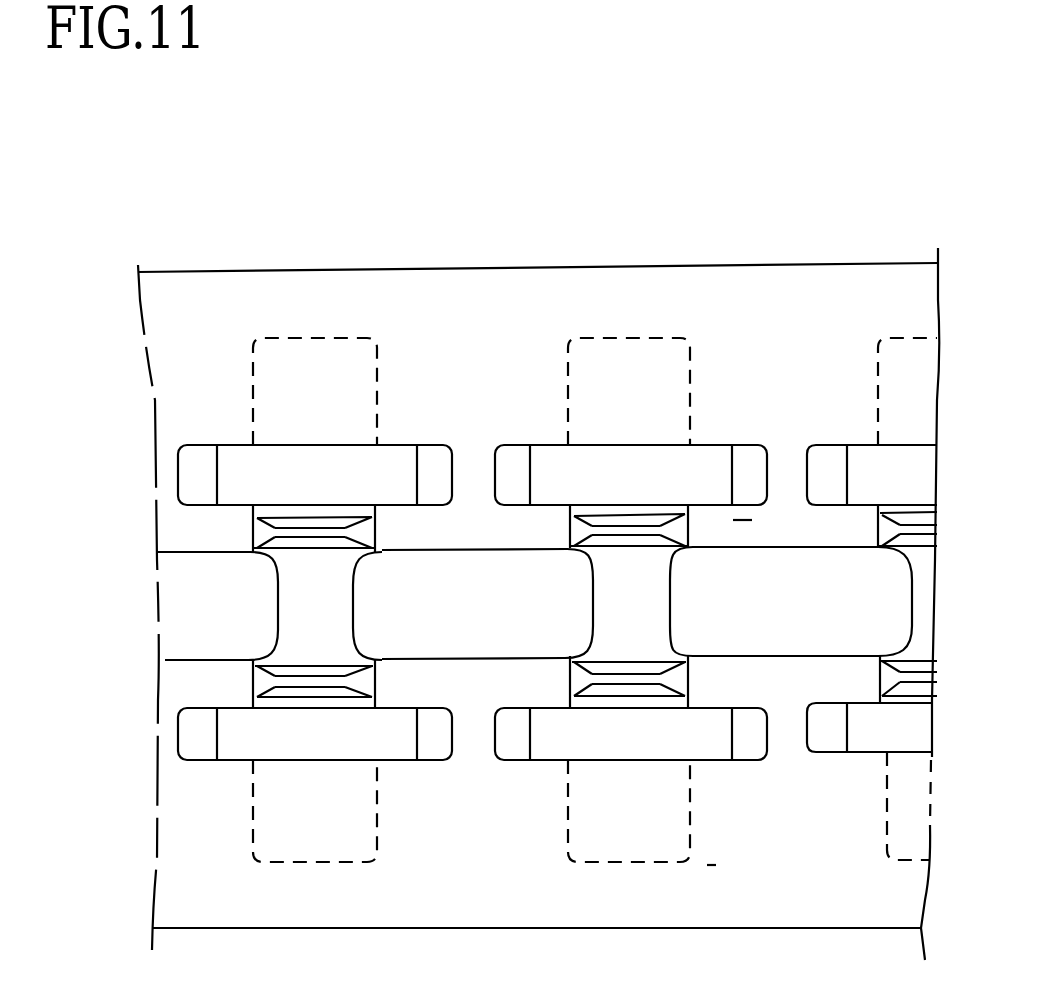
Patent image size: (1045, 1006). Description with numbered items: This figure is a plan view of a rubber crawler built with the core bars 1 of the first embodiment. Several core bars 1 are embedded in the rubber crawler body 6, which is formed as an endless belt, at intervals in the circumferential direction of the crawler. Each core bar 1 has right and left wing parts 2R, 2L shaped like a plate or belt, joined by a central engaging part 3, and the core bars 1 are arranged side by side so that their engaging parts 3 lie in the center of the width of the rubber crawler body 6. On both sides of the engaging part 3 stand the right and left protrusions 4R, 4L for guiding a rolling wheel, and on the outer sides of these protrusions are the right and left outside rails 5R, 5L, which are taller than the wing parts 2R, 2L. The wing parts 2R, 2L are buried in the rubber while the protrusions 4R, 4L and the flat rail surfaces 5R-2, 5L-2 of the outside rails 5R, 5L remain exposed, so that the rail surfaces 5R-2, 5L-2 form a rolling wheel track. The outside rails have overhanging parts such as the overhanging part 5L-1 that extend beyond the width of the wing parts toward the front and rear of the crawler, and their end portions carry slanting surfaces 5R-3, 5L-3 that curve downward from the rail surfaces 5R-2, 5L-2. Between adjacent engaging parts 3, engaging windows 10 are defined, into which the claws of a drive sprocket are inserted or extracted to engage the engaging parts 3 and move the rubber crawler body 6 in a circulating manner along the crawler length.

The core bar 1 is at (265, 338).
The right wing part 2R is at (377, 338).
The left wing part 2L is at (328, 863).
The engaging part 3 is at (652, 605).
The right protrusion 4R is at (602, 517).
The left protrusion 4L is at (277, 676).
The right outside rail 5R is at (652, 445).
The rail surface of right outside rail 5R-2 is at (320, 455).
The slanting surface of right overhanging part 5R-3 is at (200, 457).
The left outside rail 5L is at (403, 763).
The overhanging part of left outside rail 5L-1 is at (192, 762).
The rail surface of left outside rail 5L-2 is at (353, 737).
The slanting surface of left overhanging part 5L-3 is at (190, 733).
The rubber crawler body 6 is at (818, 263).
The engaging window 10 is at (867, 625).